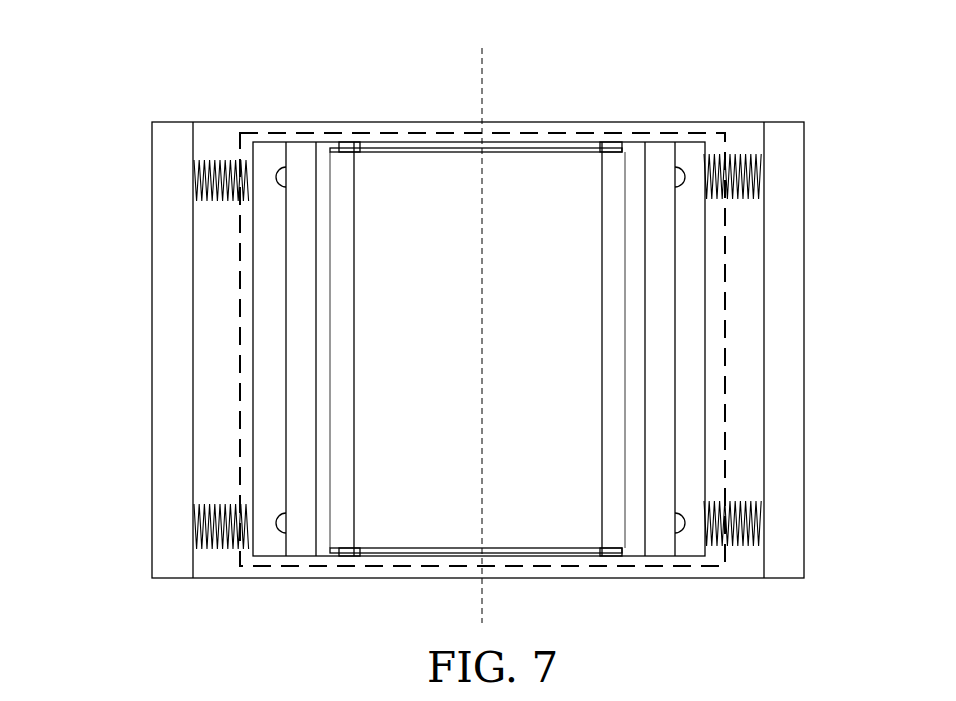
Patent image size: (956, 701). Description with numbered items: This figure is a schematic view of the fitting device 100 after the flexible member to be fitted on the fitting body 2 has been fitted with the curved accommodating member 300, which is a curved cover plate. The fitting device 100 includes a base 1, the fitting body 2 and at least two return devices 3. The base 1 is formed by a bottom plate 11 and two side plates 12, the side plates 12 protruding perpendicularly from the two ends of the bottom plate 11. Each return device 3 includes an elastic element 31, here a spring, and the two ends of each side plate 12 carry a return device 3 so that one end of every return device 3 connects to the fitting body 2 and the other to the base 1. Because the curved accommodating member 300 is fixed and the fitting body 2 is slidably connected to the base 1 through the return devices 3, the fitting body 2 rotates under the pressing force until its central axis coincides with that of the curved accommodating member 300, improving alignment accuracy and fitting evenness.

The fitting device 100 is at (153, 107).
The base 1 is at (885, 207).
The bottom plate 11 is at (747, 275).
The side plate 12 is at (173, 335).
The fitting body 2 is at (532, 133).
The curved accommodating member 300 is at (603, 183).
The return device 3 is at (478, 308).
The elastic element 31 is at (192, 197).